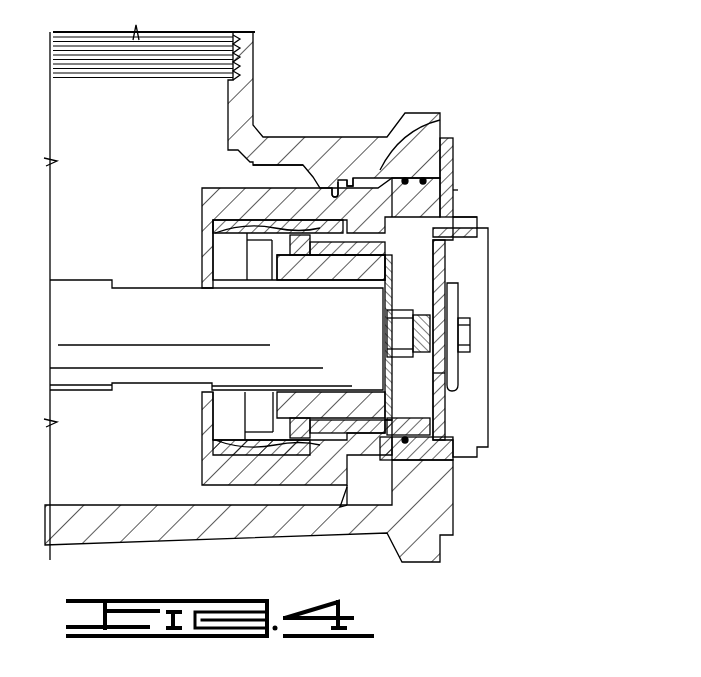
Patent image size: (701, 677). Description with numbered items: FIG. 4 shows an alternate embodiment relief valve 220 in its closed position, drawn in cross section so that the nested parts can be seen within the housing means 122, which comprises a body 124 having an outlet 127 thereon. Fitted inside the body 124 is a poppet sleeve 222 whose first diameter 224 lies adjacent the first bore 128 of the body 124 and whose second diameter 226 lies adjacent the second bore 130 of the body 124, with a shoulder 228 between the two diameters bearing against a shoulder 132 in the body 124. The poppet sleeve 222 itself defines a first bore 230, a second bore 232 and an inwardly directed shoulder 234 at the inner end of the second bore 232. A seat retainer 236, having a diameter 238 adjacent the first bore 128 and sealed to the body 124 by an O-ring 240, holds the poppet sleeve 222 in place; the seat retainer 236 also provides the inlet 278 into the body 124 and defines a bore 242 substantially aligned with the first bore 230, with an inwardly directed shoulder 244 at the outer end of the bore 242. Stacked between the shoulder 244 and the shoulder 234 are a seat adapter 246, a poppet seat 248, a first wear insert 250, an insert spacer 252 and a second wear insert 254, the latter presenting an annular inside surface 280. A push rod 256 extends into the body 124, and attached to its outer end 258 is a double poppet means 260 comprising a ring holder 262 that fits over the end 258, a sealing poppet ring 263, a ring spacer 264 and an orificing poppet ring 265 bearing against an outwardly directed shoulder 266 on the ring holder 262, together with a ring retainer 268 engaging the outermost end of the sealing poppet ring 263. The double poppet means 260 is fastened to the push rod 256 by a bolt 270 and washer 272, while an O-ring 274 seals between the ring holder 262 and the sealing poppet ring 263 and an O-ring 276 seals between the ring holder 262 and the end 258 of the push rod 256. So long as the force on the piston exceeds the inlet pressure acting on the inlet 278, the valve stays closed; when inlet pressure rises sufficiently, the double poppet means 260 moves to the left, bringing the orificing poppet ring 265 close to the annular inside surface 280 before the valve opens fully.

The outlet 127 is at (245, 53).
The housing means 122 is at (334, 114).
The body 124 is at (275, 150).
The second bore 130 is at (333, 192).
The shoulder 132 is at (356, 178).
The alternate embodiment relief valve 220 is at (430, 74).
The first diameter 224 is at (377, 168).
The poppet sleeve 222 is at (225, 203).
The second diameter 226 is at (305, 177).
The inwardly directed shoulder 234 is at (222, 228).
The second bore 232 is at (222, 256).
The outwardly directed shoulder 266 is at (298, 257).
The first bore 230 is at (372, 256).
The inwardly directed shoulder 244 is at (391, 294).
The diameter 238 is at (447, 150).
The seat retainer 236 is at (408, 180).
The O-ring 240 is at (426, 180).
The first bore 128 is at (455, 190).
The inlet 278 is at (480, 252).
The bore 242 is at (470, 222).
The double poppet means 260 is at (424, 415).
The ring retainer 268 is at (440, 280).
The O-ring 276 is at (458, 300).
The ring holder 262 is at (430, 374).
The O-ring 274 is at (433, 420).
The sealing poppet ring 263 is at (410, 442).
The orificing poppet ring 265 is at (300, 438).
The ring spacer 264 is at (328, 434).
The washer 272 is at (432, 318).
The bolt 270 is at (471, 333).
The outer end 258 is at (357, 360).
The push rod 256 is at (73, 377).
The second wear insert 254 is at (245, 455).
The annular inside surface 280 is at (250, 417).
The seat adapter 246 is at (433, 447).
The poppet seat 248 is at (413, 450).
The first wear insert 250 is at (400, 470).
The shoulder 228 is at (395, 492).
The insert spacer 252 is at (347, 490).